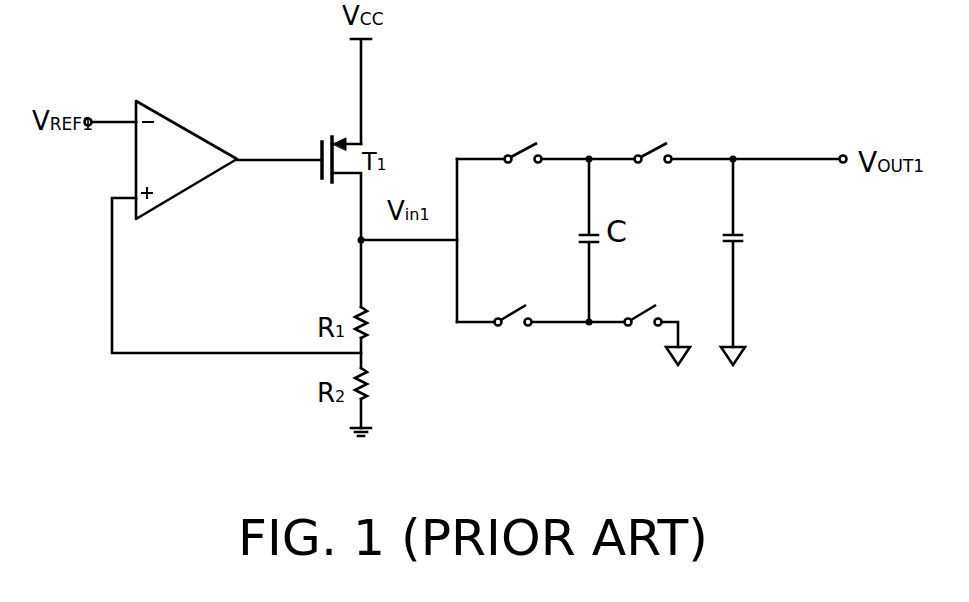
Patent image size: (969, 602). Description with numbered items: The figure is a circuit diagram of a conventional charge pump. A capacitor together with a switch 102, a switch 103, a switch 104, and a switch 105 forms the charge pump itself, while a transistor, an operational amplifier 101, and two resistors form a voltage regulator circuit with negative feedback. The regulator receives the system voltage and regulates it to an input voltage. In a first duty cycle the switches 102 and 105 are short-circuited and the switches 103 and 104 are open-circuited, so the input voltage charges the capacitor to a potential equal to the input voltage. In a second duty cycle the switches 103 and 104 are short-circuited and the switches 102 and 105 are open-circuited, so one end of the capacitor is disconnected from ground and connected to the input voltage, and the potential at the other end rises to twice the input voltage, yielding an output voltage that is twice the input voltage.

The operational amplifier 101 is at (193, 186).
The switch 102 is at (522, 167).
The switch 103 is at (658, 167).
The switch 104 is at (515, 328).
The switch 105 is at (643, 328).